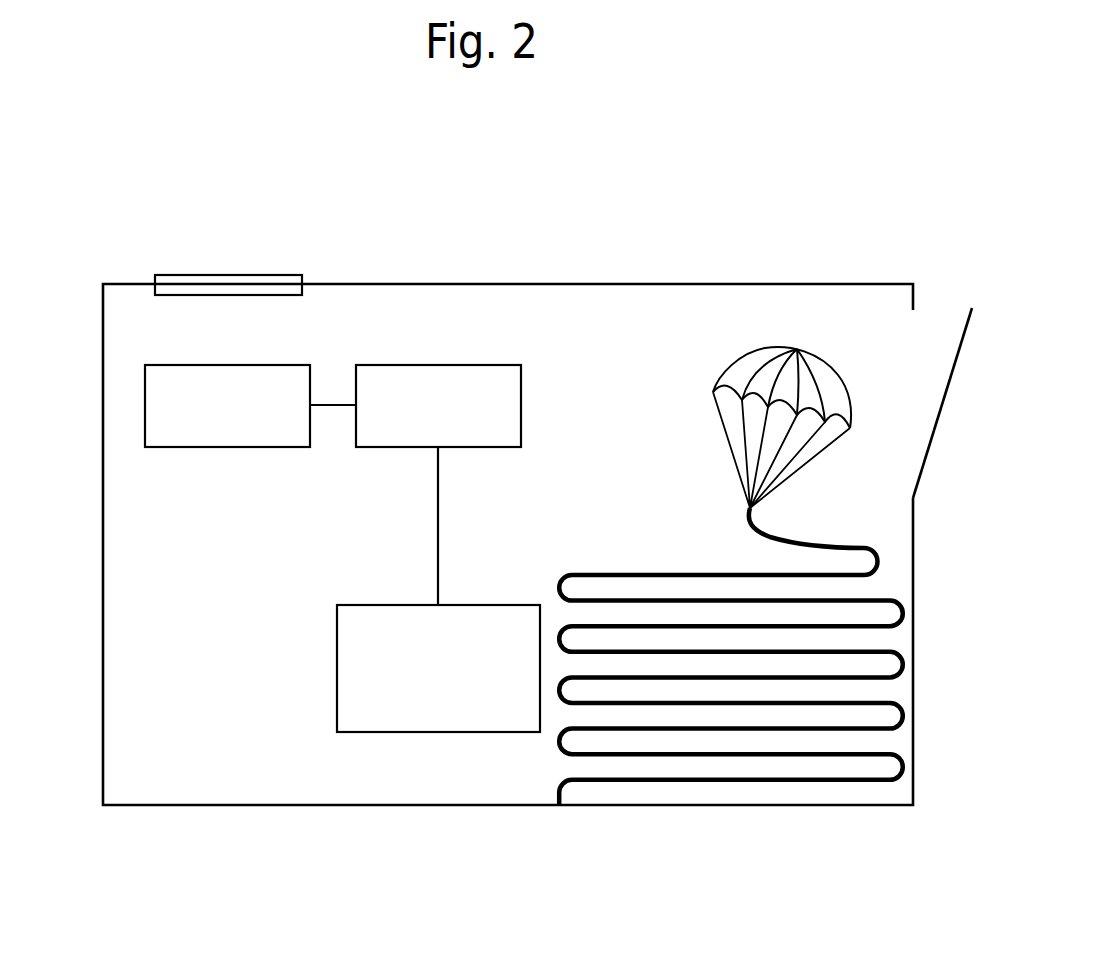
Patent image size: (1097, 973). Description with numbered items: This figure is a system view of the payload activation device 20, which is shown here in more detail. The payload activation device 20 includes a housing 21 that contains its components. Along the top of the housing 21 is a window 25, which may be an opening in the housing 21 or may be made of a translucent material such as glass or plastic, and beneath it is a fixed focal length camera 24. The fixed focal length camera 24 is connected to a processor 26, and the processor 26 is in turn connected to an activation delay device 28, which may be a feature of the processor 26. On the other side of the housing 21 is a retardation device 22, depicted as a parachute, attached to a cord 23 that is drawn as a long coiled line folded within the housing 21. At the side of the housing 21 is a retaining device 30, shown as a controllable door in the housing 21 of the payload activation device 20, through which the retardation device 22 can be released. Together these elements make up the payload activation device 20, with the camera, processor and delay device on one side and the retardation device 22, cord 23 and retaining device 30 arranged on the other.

The payload activation device 20 is at (106, 227).
The housing 21 is at (823, 805).
The retardation device 22 is at (770, 365).
The cord 23 is at (636, 755).
The fixed focal length camera 24 is at (186, 367).
The window 25 is at (252, 282).
The processor 26 is at (413, 368).
The activation delay device 28 is at (448, 732).
The retaining device 30 is at (938, 427).